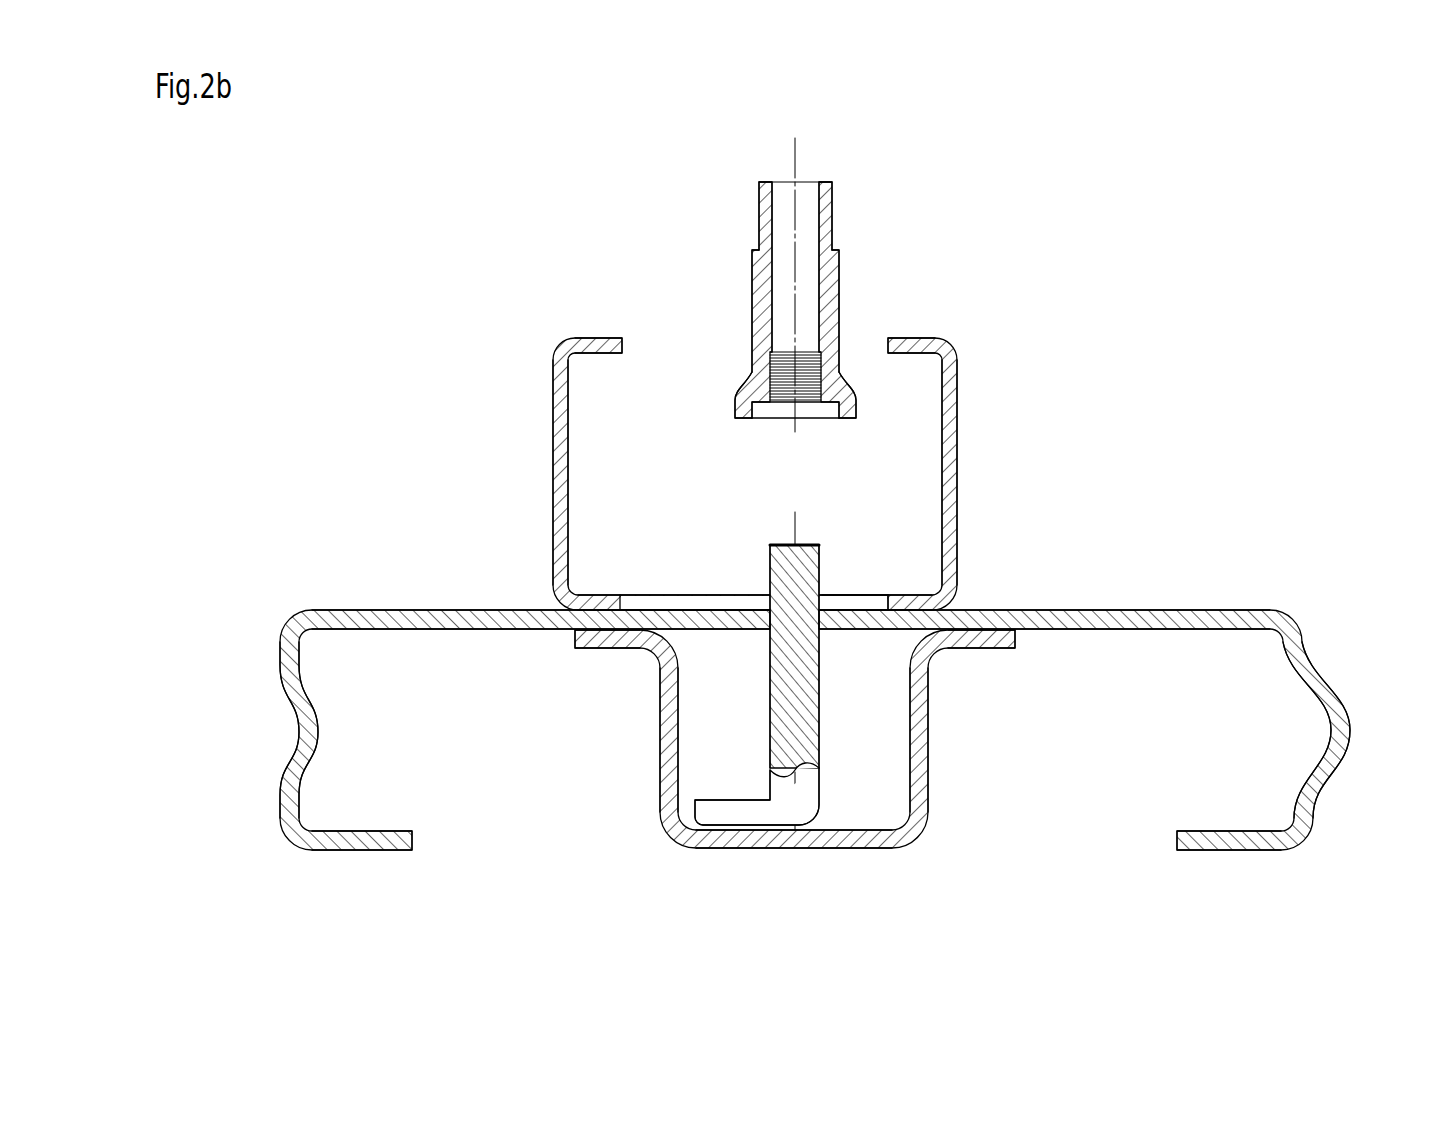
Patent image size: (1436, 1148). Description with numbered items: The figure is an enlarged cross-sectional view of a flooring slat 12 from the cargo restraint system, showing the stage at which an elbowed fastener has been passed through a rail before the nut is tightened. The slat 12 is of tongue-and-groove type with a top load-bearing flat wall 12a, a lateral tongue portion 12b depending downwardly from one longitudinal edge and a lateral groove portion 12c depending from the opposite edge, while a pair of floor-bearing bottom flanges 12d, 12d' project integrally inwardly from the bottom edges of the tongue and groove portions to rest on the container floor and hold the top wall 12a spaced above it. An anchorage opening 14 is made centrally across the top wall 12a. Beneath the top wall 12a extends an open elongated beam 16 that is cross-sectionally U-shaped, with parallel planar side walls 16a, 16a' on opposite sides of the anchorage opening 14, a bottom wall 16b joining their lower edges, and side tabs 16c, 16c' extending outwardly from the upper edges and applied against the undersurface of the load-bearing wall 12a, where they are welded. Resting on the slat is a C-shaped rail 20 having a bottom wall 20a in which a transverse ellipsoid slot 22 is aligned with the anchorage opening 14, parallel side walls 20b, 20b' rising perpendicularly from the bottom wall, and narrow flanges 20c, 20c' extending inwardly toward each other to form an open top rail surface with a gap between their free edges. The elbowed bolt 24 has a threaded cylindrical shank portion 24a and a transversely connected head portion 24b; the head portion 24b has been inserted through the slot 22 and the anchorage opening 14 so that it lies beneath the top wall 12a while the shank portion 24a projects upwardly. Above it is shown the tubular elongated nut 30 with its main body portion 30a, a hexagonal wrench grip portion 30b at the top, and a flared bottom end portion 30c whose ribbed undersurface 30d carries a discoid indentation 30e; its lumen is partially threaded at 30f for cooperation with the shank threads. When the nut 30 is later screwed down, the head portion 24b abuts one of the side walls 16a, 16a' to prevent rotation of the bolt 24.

The flooring slat 12 is at (1262, 600).
The top load-bearing flat wall 12a is at (1135, 610).
The lateral tongue portion 12b is at (1345, 702).
The lateral groove portion 12c is at (292, 703).
The floor-bearing bottom flange 12d is at (379, 881).
The floor-bearing bottom flange 12d' is at (1208, 868).
The anchorage opening 14 is at (770, 590).
The open elongated beam 16 is at (840, 862).
The side wall 16a is at (616, 740).
The side wall 16a' is at (974, 740).
The bottom wall 16b is at (735, 848).
The side tab 16c is at (580, 672).
The side tab 16c' is at (1012, 666).
The rail 20 is at (952, 336).
The bottom wall 20a is at (615, 605).
The side wall 20b is at (494, 472).
The side wall 20b' is at (1021, 472).
The narrow flange 20c is at (561, 315).
The narrow flange 20c' is at (942, 308).
The slot 22 is at (888, 606).
The elbowed bolt 24 is at (830, 776).
The shank portion 24a is at (800, 545).
The head portion 24b is at (726, 812).
The tubular elongated nut 30 is at (852, 266).
The main body portion 30a is at (752, 320).
The hexagonal wrench grip portion 30b is at (760, 222).
The flared bottom end portion 30c is at (858, 410).
The undersurface 30d is at (762, 418).
The discoid indentation 30e is at (805, 378).
The threaded portion of lumen wall 30f is at (797, 420).